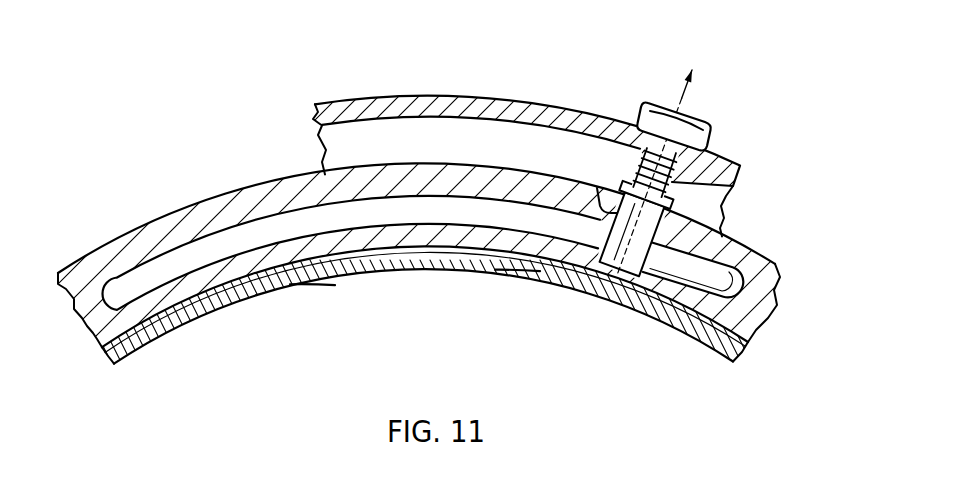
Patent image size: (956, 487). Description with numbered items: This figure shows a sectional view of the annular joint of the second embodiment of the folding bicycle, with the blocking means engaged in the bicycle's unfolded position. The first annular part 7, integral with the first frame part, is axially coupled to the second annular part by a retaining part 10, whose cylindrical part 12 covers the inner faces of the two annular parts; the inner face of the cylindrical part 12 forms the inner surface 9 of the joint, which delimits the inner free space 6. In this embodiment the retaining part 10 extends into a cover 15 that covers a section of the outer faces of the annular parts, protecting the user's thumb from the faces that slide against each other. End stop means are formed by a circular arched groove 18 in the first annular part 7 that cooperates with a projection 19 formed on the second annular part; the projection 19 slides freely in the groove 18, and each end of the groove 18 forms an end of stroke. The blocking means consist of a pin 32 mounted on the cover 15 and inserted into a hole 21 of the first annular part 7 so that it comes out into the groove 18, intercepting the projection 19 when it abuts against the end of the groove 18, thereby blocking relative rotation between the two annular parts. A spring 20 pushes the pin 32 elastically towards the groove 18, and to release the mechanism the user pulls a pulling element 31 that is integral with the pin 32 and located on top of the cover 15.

The inner free space 6 is at (227, 357).
The first annular part 7 is at (160, 230).
The inner surface 9 is at (517, 278).
The retaining part 10 is at (312, 290).
The cylindrical part 12 is at (388, 266).
The cover 15 is at (446, 96).
The circular arched groove 18 is at (258, 237).
The projection 19 is at (708, 282).
The spring 20 is at (742, 172).
The hole 21 is at (596, 187).
The pulling element 31 is at (695, 110).
The pin 32 is at (622, 247).